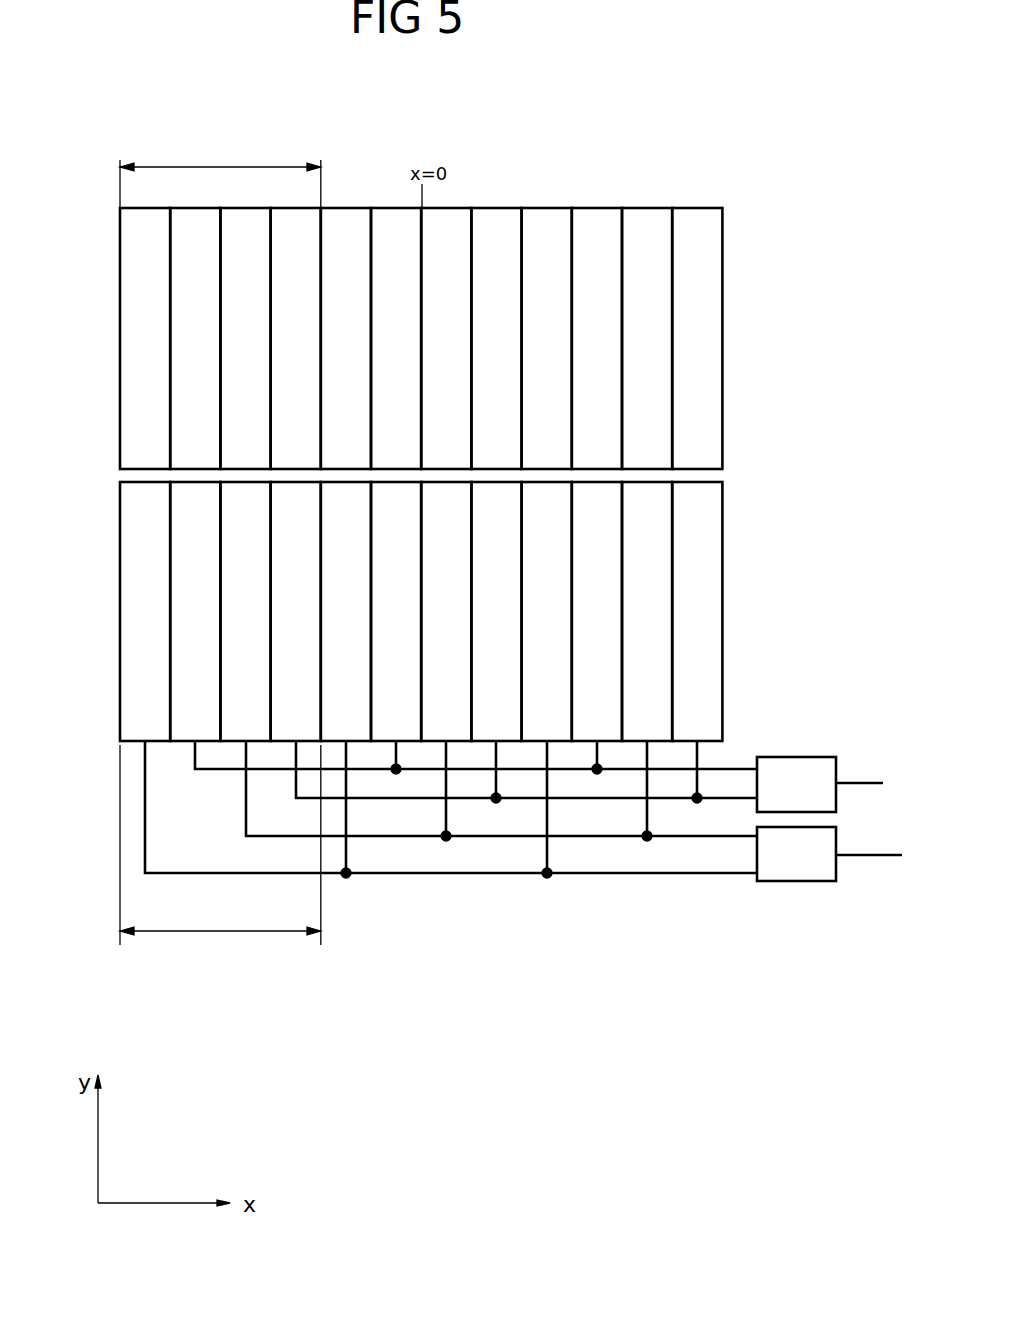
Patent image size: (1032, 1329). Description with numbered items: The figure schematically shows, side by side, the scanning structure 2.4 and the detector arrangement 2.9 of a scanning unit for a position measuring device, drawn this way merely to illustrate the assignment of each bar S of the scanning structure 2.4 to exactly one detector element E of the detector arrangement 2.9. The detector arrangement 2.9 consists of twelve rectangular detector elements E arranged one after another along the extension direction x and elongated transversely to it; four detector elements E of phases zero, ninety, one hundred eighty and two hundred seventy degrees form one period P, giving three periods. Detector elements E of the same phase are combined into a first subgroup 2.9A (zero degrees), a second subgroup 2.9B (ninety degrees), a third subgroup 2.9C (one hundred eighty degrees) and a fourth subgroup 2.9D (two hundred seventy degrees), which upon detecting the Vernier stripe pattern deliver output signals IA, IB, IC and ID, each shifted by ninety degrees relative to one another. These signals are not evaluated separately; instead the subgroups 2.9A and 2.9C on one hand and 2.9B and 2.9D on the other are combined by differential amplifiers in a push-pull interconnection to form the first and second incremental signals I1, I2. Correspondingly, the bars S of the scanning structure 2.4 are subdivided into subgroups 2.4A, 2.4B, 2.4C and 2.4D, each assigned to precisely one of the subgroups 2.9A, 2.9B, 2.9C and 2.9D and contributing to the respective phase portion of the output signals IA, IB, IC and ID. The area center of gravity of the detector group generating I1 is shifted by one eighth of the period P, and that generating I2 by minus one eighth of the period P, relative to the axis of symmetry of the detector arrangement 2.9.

The scanning structure 2.4 is at (409, 338).
The first subgroup of bars 2.4A is at (393, 339).
The second subgroup of bars 2.4B is at (445, 384).
The third subgroup of bars 2.4C is at (503, 442).
The fourth subgroup of bars 2.4D is at (343, 273).
The detector arrangement 2.9 is at (428, 616).
The first subgroup of detector elements 2.9A is at (390, 622).
The second subgroup of detector elements 2.9B is at (442, 654).
The third subgroup of detector elements 2.9C is at (502, 716).
The fourth subgroup of detector elements 2.9D is at (345, 562).
The bar S is at (688, 208).
The detector element E is at (702, 483).
The output signal IA is at (215, 771).
The output signal IB is at (285, 838).
The output signal IC is at (383, 800).
The output signal ID is at (138, 827).
The first incremental signal I1 is at (855, 782).
The second incremental signal I2 is at (868, 857).
The period of detector elements P is at (220, 845).